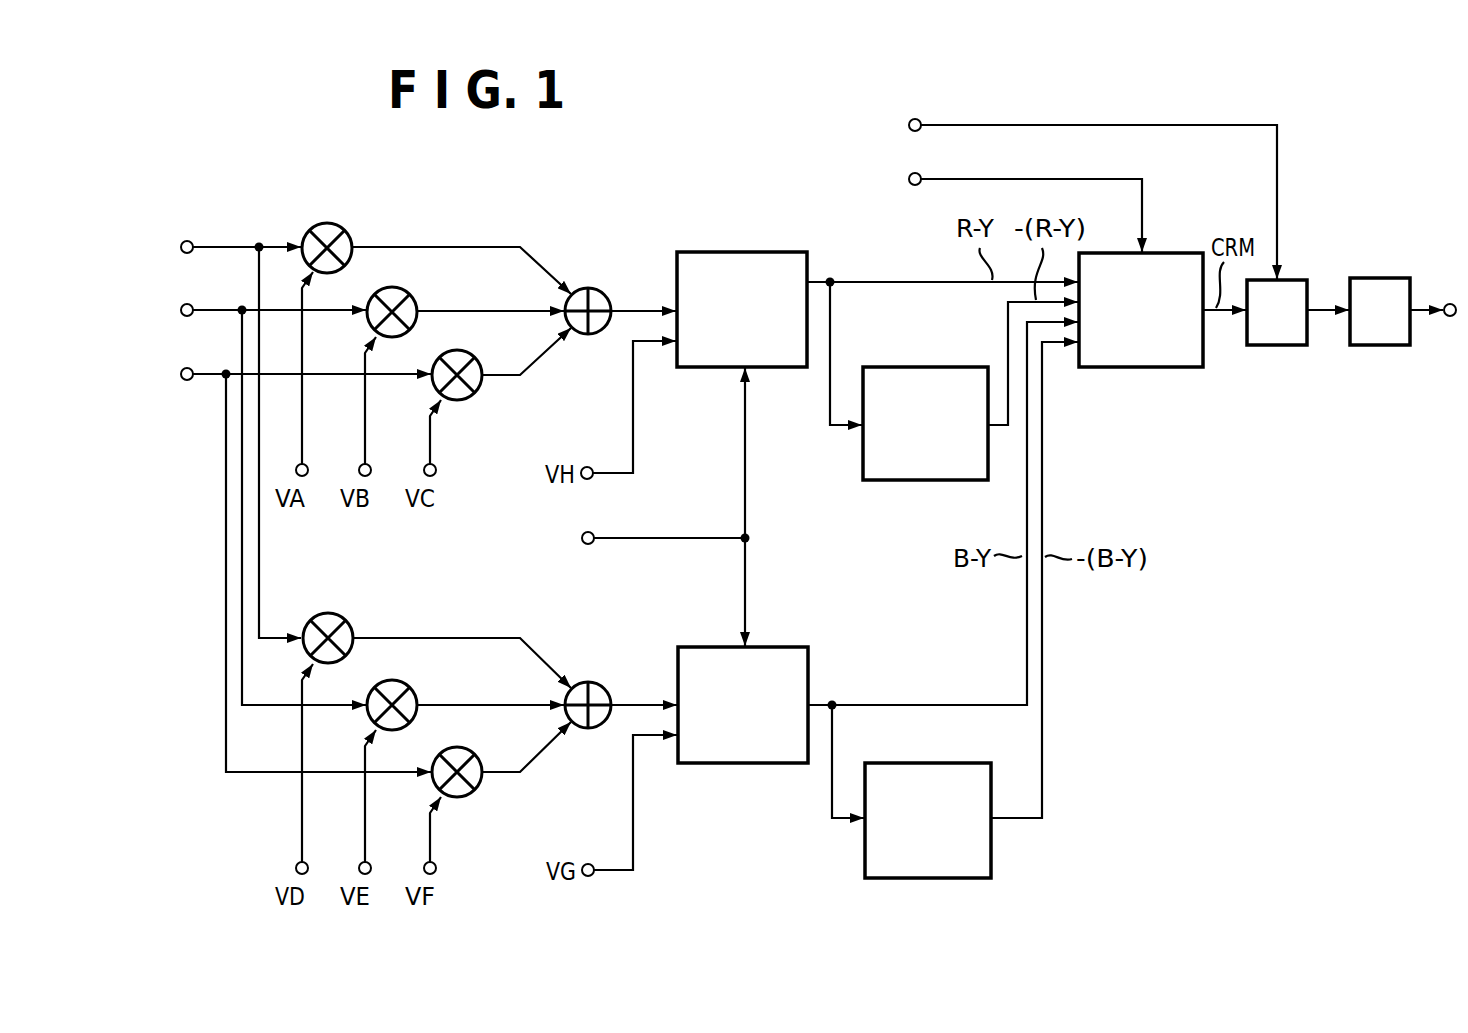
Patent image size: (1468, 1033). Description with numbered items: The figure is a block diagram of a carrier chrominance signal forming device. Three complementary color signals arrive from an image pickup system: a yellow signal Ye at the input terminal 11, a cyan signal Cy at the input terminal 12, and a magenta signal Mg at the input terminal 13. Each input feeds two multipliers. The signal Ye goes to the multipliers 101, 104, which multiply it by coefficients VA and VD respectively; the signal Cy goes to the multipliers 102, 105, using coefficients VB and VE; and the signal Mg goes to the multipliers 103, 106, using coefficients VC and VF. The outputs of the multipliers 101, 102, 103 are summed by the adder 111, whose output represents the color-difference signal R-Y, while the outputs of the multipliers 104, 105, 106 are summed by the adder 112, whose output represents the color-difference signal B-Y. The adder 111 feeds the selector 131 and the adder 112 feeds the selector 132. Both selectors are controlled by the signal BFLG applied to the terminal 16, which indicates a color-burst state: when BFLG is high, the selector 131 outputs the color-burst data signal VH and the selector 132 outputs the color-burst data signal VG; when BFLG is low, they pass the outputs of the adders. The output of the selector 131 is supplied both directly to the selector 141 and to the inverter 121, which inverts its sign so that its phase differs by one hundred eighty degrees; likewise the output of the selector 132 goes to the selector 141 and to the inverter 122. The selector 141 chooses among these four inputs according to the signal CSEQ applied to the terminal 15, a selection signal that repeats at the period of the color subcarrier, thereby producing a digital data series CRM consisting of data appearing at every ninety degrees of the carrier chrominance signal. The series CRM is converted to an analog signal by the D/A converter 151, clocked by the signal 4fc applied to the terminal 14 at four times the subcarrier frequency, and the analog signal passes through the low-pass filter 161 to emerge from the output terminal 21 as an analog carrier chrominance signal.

The input terminal 11 is at (188, 241).
The input terminal 12 is at (194, 304).
The input terminal 13 is at (187, 381).
The terminal 14 is at (915, 118).
The terminal 15 is at (915, 186).
The terminal 16 is at (590, 545).
The output terminal 21 is at (1450, 317).
The multiplier 101 is at (345, 232).
The multiplier 102 is at (410, 296).
The multiplier 103 is at (475, 359).
The multiplier 104 is at (346, 622).
The multiplier 105 is at (410, 689).
The multiplier 106 is at (475, 756).
The adder 111 is at (597, 290).
The adder 112 is at (604, 687).
The inverter 121 is at (935, 367).
The inverter 122 is at (937, 763).
The selector 131 is at (708, 252).
The selector 132 is at (707, 763).
The selector 141 is at (1175, 367).
The D/A converter 151 is at (1286, 345).
The low-pass filter 161 is at (1394, 345).